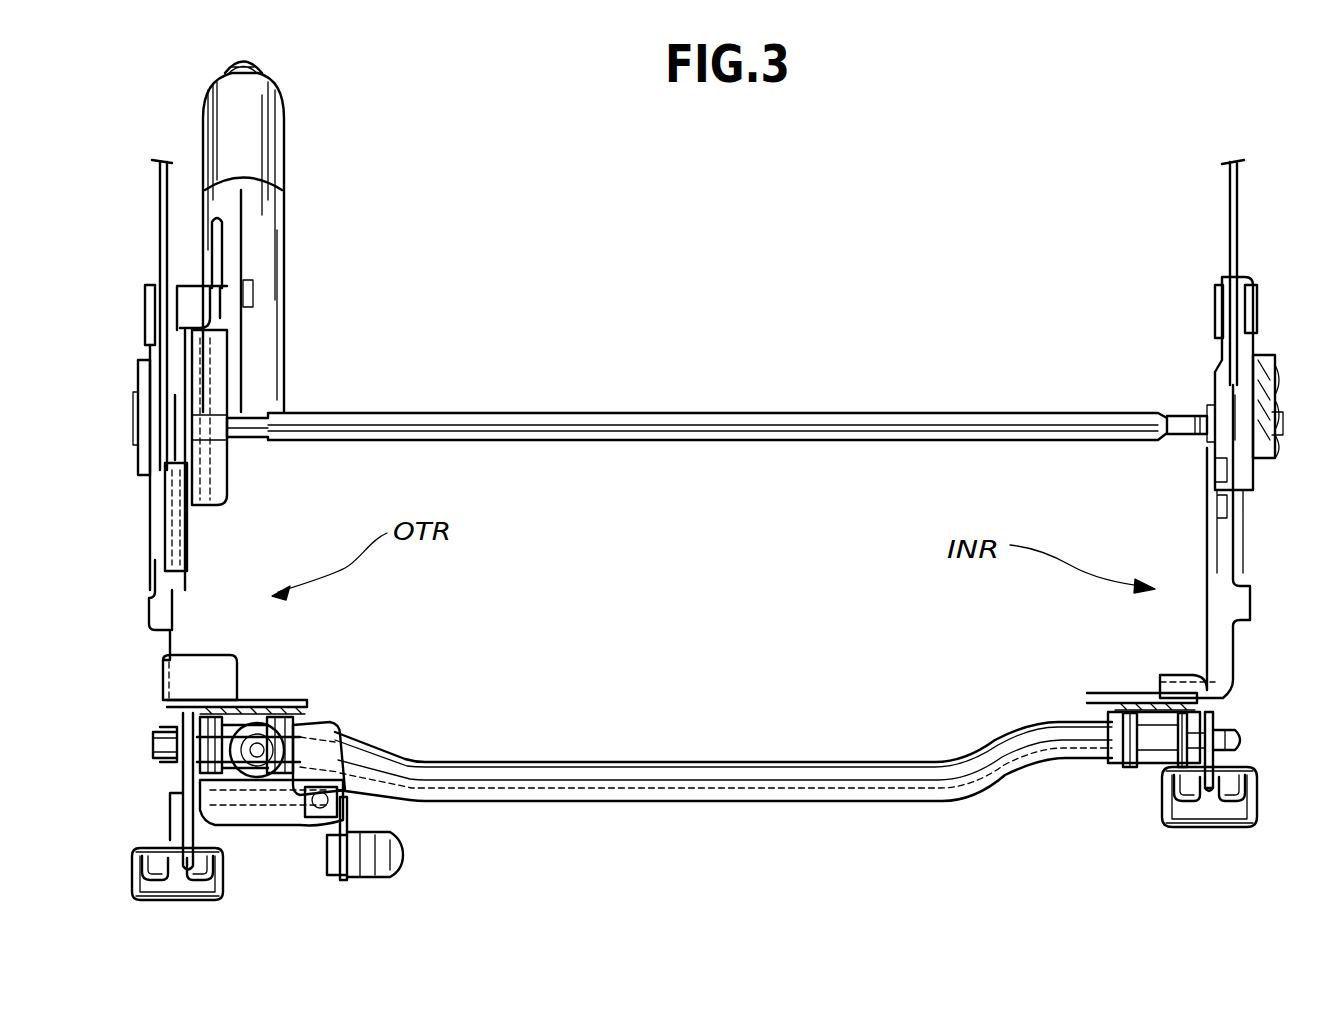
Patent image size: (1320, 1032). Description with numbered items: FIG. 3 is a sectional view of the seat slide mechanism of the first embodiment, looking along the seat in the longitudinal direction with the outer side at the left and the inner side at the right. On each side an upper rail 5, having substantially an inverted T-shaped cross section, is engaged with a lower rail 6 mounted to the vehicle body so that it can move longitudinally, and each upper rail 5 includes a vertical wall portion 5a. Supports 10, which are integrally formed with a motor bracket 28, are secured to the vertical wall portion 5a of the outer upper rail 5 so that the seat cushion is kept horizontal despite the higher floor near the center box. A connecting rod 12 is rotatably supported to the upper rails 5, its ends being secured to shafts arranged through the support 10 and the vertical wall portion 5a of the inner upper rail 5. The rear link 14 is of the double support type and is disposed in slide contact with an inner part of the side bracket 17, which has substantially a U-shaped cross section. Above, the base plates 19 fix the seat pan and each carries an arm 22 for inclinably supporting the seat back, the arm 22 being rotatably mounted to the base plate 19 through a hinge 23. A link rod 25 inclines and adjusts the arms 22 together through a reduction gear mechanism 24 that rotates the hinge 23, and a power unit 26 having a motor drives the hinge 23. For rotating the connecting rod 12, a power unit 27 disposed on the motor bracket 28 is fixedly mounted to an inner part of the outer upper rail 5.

The upper rail 5 is at (198, 877).
The vertical wall portion 5a is at (170, 808).
The lower rail 6 is at (132, 880).
The support 10 is at (183, 720).
The connecting rod 12 is at (710, 762).
The rear link 14 is at (218, 727).
The side bracket 17 is at (307, 703).
The base plate 19 is at (160, 670).
The arm 22 is at (160, 237).
The hinge 23 is at (140, 410).
The reduction gear mechanism 24 is at (228, 504).
The link rod 25 is at (752, 411).
The power unit 26 is at (277, 147).
The power unit 27 is at (333, 722).
The motor bracket 28 is at (268, 832).